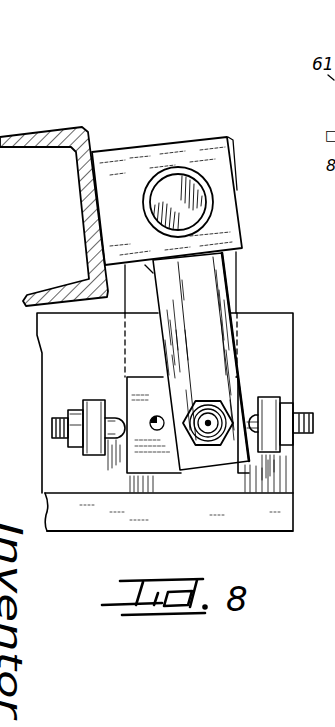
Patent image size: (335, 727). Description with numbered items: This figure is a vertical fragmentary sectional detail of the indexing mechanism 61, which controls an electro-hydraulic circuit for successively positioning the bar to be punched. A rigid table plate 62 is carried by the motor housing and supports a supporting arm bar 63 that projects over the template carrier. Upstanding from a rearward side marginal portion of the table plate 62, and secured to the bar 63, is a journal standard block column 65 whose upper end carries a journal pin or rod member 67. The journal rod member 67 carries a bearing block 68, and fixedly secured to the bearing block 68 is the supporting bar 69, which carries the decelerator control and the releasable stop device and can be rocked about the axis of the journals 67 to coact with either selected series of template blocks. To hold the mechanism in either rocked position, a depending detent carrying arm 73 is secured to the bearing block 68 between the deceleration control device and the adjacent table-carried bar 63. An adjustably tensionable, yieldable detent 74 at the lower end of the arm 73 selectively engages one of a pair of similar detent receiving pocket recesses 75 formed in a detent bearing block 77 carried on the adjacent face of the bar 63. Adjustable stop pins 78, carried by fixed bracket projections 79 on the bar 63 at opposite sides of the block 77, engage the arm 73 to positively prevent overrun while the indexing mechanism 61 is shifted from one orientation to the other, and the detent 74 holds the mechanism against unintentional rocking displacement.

The indexing mechanism 61 is at (126, 88).
The table plate 62 is at (261, 519).
The supporting arm bar 63 is at (272, 322).
The journal standard block column 65 is at (233, 273).
The journal pin or rod member 67 is at (179, 196).
The bearing block 68 is at (135, 165).
The supporting bar 69 is at (80, 205).
The detent carrying arm 73 is at (229, 388).
The detent 74 is at (208, 416).
The detent receiving pocket recess 75 is at (152, 427).
The detent bearing block 77 is at (146, 383).
The adjustable stop pin 78 is at (57, 436).
The bracket projection 79 is at (97, 400).